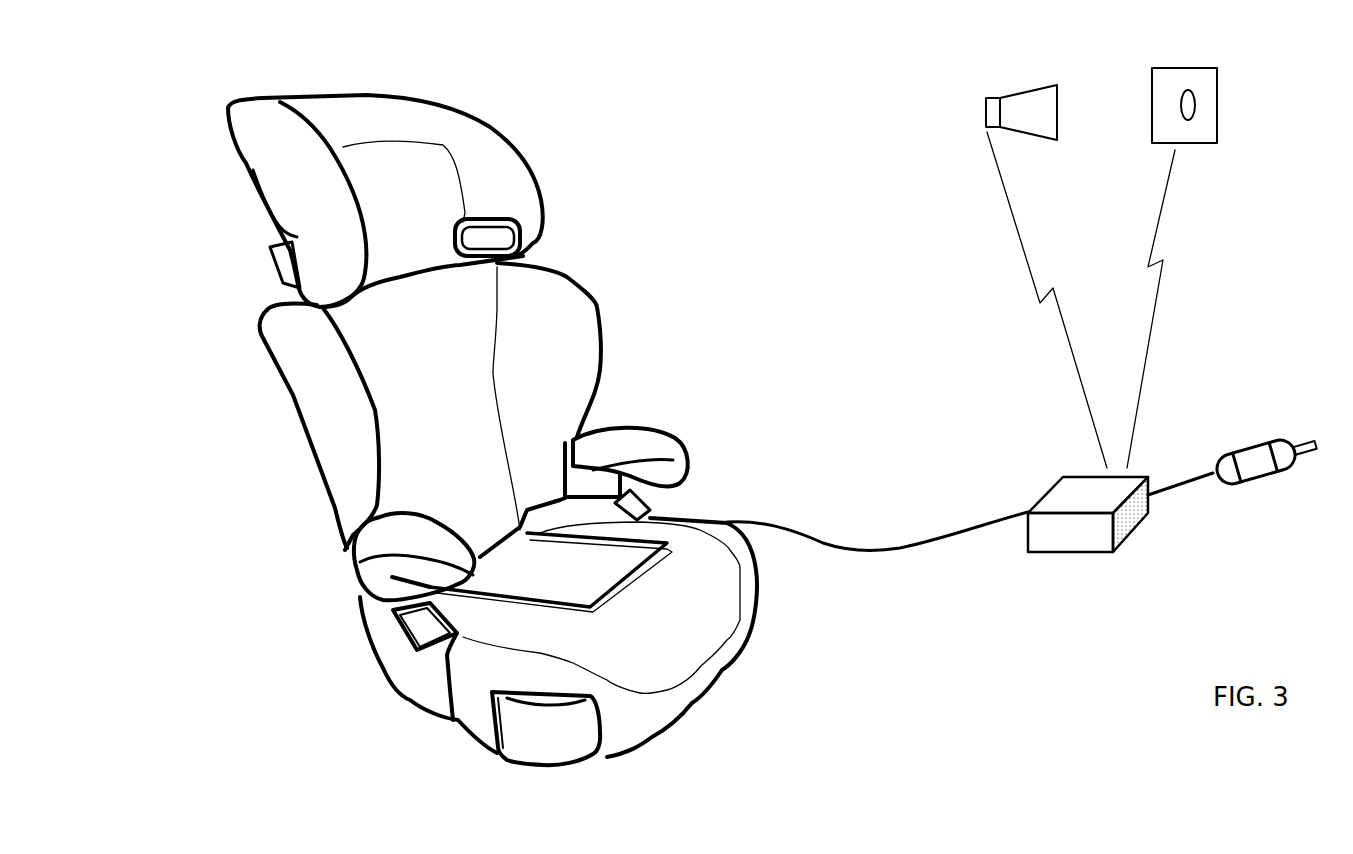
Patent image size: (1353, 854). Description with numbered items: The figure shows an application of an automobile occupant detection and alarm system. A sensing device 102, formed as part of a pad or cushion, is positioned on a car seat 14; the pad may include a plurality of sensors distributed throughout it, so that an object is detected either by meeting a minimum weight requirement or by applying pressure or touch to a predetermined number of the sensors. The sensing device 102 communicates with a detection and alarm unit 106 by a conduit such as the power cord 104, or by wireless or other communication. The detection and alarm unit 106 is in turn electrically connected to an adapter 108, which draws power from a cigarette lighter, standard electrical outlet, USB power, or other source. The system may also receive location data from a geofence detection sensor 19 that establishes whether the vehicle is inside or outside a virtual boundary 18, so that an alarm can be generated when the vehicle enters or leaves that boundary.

The car seat 14 is at (250, 198).
The virtual boundary 18 is at (1028, 90).
The geofence detection sensor 19 is at (1217, 100).
The sensing device 102 is at (655, 547).
The power cord 104 is at (820, 547).
The detection and alarm unit 106 is at (1095, 546).
The adapter 108 is at (1253, 443).